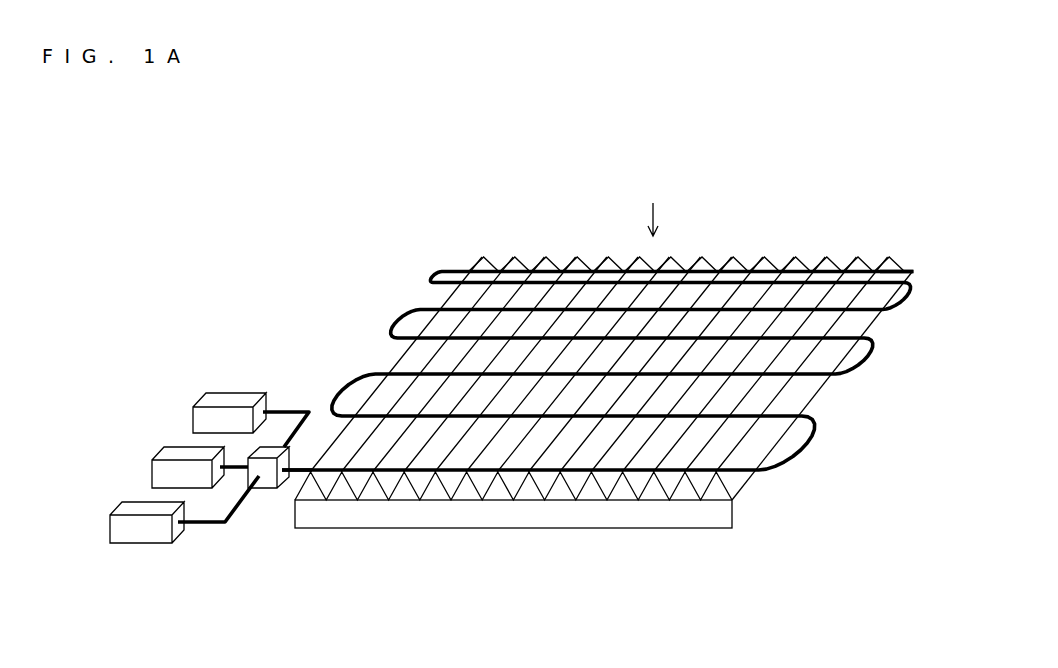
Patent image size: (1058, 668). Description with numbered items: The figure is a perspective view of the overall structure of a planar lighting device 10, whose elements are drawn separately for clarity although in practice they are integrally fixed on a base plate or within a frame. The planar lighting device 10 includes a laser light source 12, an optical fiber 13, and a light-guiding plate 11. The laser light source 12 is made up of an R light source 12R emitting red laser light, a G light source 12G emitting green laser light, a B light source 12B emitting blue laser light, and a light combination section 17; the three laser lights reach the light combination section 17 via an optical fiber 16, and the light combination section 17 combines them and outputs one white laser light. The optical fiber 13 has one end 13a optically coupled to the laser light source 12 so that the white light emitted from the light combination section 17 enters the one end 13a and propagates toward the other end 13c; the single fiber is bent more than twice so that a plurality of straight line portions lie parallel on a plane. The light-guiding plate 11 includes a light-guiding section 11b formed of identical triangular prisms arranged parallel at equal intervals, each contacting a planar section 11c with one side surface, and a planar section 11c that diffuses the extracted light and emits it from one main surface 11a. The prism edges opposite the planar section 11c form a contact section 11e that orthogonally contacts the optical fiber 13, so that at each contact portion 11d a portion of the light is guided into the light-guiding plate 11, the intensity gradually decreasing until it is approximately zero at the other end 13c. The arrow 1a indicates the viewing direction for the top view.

The planar lighting device 10 is at (246, 147).
The arrow 1a is at (655, 207).
The light-guiding plate 11 is at (603, 437).
The main surface 11a is at (645, 528).
The light-guiding section 11b is at (686, 407).
The planar section 11c is at (743, 510).
The contact portion 11d is at (692, 500).
The contact section 11e is at (752, 440).
The laser light source 12 is at (158, 457).
The R light source 12R is at (197, 398).
The G light source 12G is at (157, 457).
The B light source 12B is at (121, 514).
The optical fiber 13 is at (404, 315).
The one end 13a is at (288, 466).
The other end 13c is at (912, 270).
The optical fiber 16 is at (203, 525).
The light combination section 17 is at (265, 491).